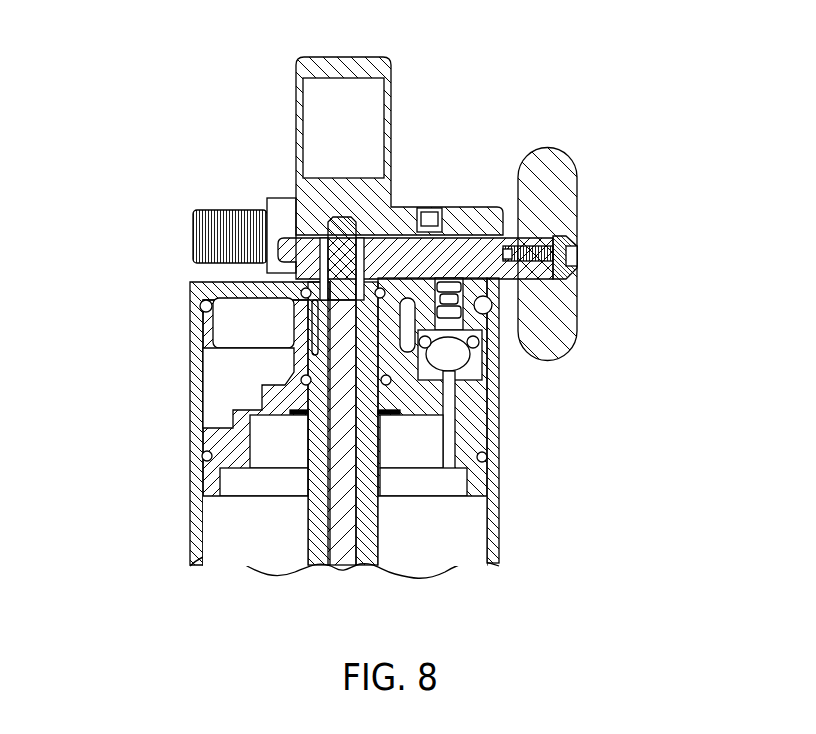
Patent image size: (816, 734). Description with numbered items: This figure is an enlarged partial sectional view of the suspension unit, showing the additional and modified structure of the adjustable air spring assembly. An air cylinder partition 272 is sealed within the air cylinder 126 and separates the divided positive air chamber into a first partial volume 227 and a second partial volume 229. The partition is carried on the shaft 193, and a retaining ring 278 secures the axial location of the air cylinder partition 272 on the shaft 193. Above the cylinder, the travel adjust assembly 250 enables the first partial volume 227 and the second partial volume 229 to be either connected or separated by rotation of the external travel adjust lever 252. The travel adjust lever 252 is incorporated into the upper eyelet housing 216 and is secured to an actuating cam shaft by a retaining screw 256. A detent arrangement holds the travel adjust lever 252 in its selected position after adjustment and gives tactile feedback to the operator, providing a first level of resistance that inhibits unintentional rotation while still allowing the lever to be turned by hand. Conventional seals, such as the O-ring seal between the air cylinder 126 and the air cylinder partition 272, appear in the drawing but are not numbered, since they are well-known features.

The travel adjust assembly 250 is at (467, 117).
The upper eyelet housing 216 is at (343, 192).
The travel adjust lever 252 is at (552, 203).
The retaining screw 256 is at (580, 250).
The second partial volume 229 is at (233, 382).
The air cylinder partition 272 is at (472, 418).
The retaining ring 278 is at (392, 418).
The first partial volume 227 is at (490, 532).
The air cylinder 126 is at (493, 548).
The shaft 193 is at (372, 562).